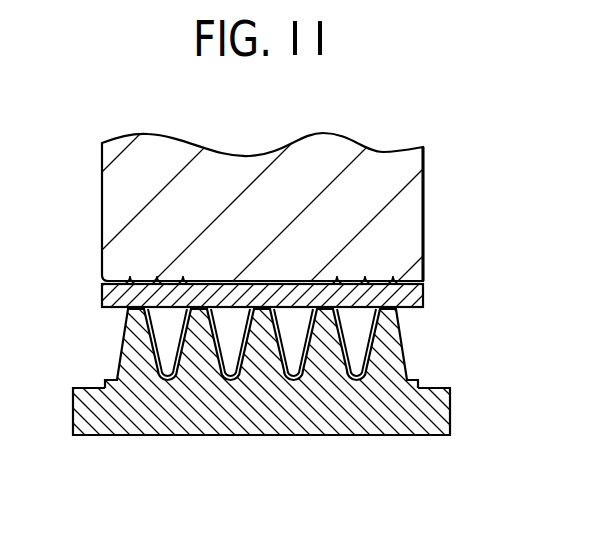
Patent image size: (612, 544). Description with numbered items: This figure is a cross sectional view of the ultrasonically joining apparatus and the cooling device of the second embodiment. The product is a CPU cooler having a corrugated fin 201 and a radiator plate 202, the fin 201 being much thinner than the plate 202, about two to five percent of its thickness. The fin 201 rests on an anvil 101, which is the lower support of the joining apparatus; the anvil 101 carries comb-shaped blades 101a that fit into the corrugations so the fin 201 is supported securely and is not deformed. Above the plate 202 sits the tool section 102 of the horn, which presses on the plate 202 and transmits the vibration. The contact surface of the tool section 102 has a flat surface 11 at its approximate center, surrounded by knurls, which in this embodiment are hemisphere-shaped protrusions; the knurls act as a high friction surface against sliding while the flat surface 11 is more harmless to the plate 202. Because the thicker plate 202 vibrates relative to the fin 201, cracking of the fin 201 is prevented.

The tool section 102 is at (392, 165).
The flat surface 11 is at (268, 282).
The radiator plate 202 is at (425, 292).
The anvil 101 is at (402, 436).
The comb-shaped blades 101a is at (387, 347).
The corrugated fin 201 is at (412, 377).